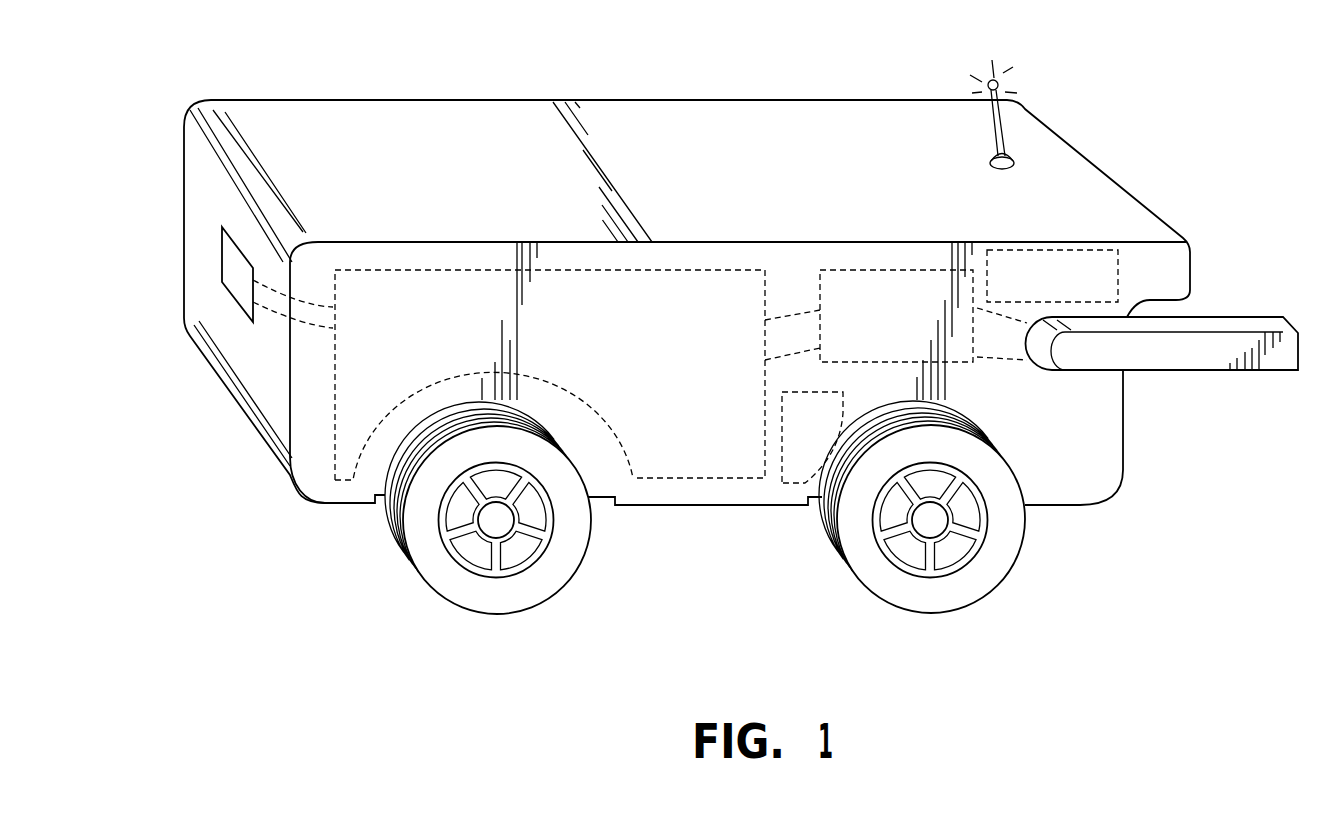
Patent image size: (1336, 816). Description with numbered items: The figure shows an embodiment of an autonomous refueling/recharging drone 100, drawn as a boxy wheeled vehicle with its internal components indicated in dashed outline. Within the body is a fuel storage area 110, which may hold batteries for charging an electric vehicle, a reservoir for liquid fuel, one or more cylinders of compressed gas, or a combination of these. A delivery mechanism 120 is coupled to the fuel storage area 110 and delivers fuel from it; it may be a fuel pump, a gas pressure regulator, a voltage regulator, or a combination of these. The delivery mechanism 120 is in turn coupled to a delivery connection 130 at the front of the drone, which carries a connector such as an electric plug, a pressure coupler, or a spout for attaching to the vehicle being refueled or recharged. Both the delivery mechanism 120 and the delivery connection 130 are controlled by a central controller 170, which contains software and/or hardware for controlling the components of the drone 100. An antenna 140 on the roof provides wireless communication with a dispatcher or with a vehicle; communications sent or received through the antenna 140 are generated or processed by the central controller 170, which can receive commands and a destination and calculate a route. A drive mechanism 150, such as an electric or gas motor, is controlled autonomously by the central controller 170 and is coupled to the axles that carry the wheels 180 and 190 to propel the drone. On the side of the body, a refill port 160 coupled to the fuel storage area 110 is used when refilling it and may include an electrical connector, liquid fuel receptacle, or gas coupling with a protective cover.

The autonomous refueling/recharging drone 100 is at (460, 100).
The fuel storage area 110 is at (703, 445).
The delivery mechanism 120 is at (953, 348).
The delivery connection 130 is at (1157, 352).
The antenna 140 is at (1012, 160).
The drive mechanism 150 is at (802, 440).
The refill port 160 is at (232, 270).
The central controller 170 is at (1090, 273).
The wheel 180 is at (545, 578).
The wheel 190 is at (1000, 560).